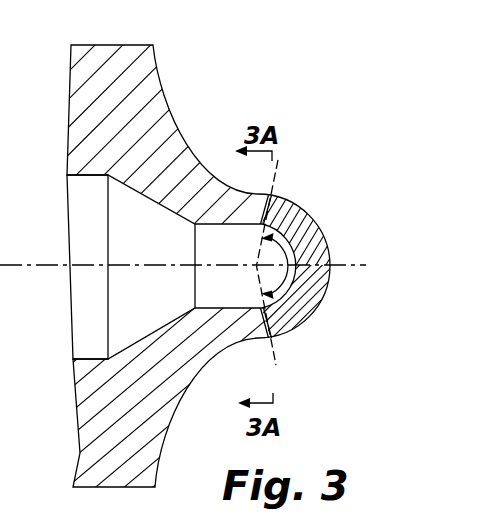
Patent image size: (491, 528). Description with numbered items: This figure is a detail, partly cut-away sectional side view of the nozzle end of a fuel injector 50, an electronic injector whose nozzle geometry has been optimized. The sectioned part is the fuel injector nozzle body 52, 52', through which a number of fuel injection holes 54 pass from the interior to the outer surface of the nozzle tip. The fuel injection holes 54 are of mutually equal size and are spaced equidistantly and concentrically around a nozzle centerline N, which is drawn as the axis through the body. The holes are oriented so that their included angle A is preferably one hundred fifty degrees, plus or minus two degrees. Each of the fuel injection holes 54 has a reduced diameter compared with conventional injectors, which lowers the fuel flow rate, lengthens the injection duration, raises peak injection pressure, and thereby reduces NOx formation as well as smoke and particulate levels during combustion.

The fuel injector 50 is at (193, 100).
The fuel injector nozzle body 52 is at (315, 219).
The fuel injector nozzle body 52' is at (279, 266).
The fuel injection holes 54 is at (272, 196).
The nozzle centerline N is at (85, 267).
The included angle A is at (305, 234).